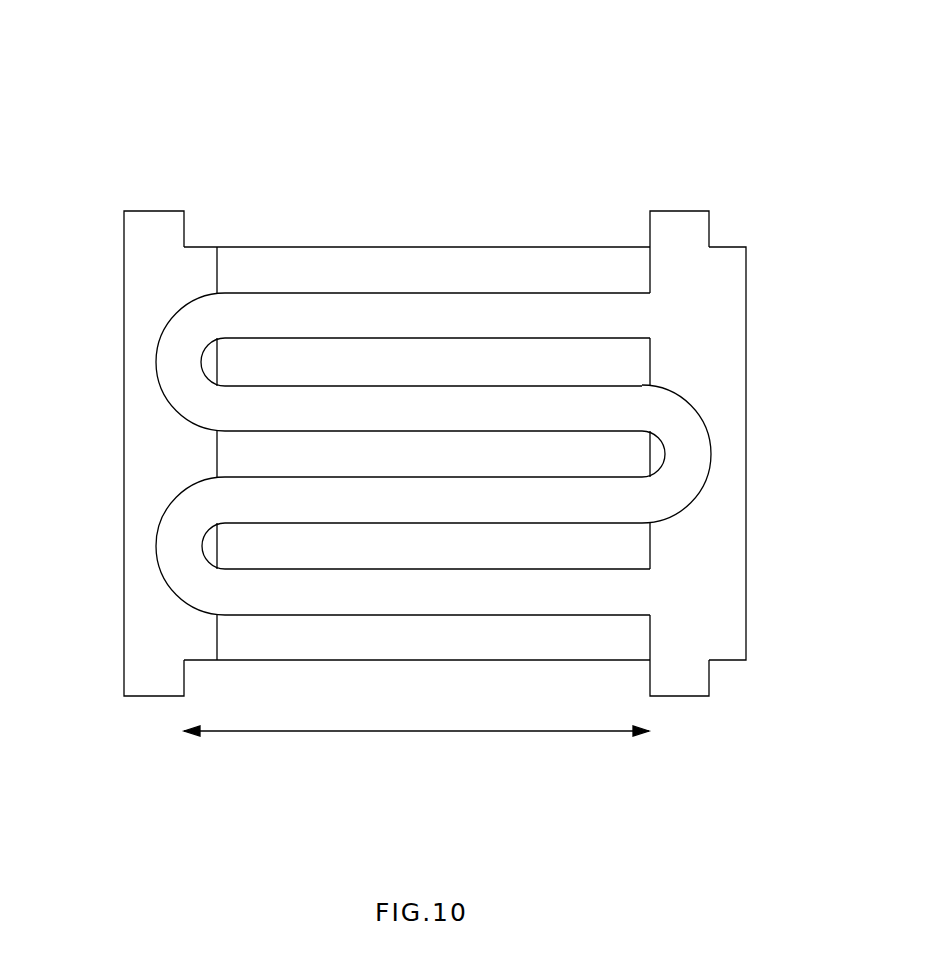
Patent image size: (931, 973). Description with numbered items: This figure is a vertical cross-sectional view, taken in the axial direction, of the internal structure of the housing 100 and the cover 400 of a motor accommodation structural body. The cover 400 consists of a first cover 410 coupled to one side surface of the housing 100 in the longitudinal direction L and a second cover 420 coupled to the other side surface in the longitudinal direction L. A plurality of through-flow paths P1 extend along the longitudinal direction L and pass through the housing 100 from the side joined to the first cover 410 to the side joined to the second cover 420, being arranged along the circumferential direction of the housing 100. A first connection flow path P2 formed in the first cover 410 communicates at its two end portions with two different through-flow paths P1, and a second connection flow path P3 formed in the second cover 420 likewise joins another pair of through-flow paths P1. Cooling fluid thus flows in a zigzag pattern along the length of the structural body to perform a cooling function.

The housing 100 is at (358, 247).
The cover 400 is at (732, 27).
The first cover 410 is at (680, 222).
The second cover 420 is at (153, 222).
The through-flow path P1 is at (493, 314).
The first connection flow path P2 is at (677, 478).
The second connection flow path P3 is at (185, 352).
The longitudinal direction L is at (416, 731).